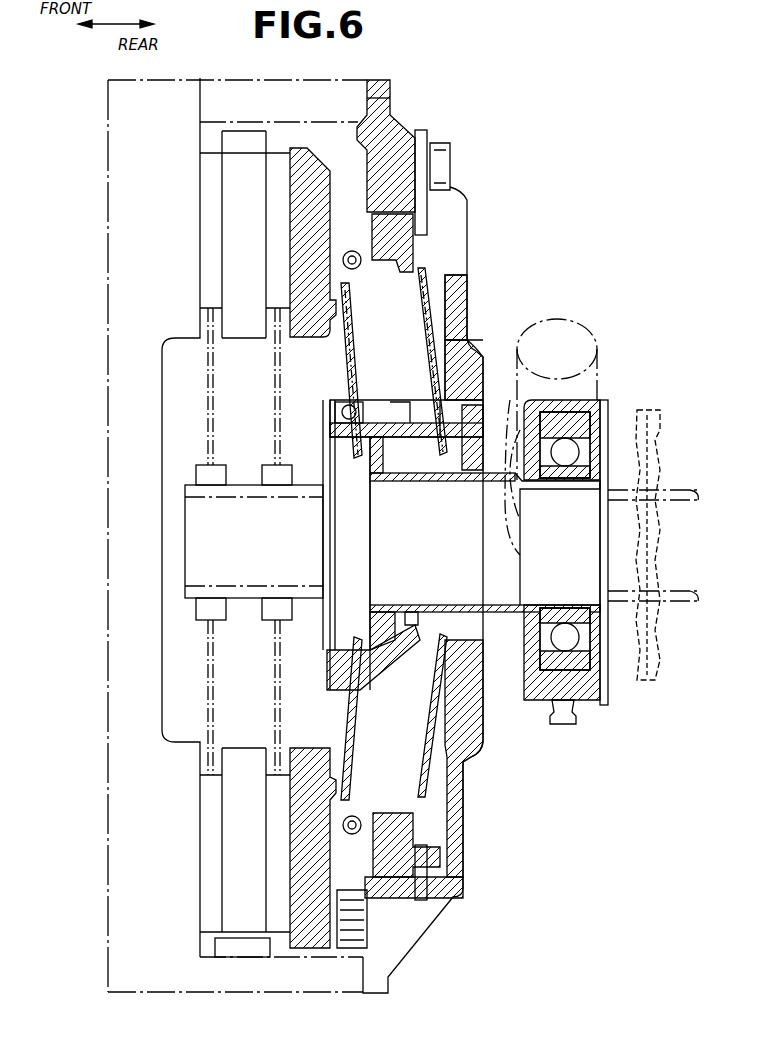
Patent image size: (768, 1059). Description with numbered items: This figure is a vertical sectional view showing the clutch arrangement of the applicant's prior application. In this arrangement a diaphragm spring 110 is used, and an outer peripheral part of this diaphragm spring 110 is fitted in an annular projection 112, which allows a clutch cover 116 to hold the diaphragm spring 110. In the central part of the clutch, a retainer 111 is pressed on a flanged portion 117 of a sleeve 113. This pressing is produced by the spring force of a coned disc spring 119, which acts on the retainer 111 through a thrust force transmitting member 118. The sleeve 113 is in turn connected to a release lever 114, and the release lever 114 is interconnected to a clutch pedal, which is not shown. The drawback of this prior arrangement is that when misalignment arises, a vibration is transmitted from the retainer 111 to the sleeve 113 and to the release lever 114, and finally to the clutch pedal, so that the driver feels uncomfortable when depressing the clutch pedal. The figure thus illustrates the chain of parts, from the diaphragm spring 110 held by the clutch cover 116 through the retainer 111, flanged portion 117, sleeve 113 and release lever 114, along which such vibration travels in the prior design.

The diaphragm spring 110 is at (433, 290).
The retainer 111 is at (388, 675).
The annular projection 112 is at (430, 258).
The sleeve 113 is at (318, 618).
The release lever 114 is at (510, 530).
The clutch cover 116 is at (467, 203).
The flanged portion 117 is at (378, 632).
The thrust force transmitting member 118 is at (383, 470).
The coned disc spring 119 is at (420, 616).